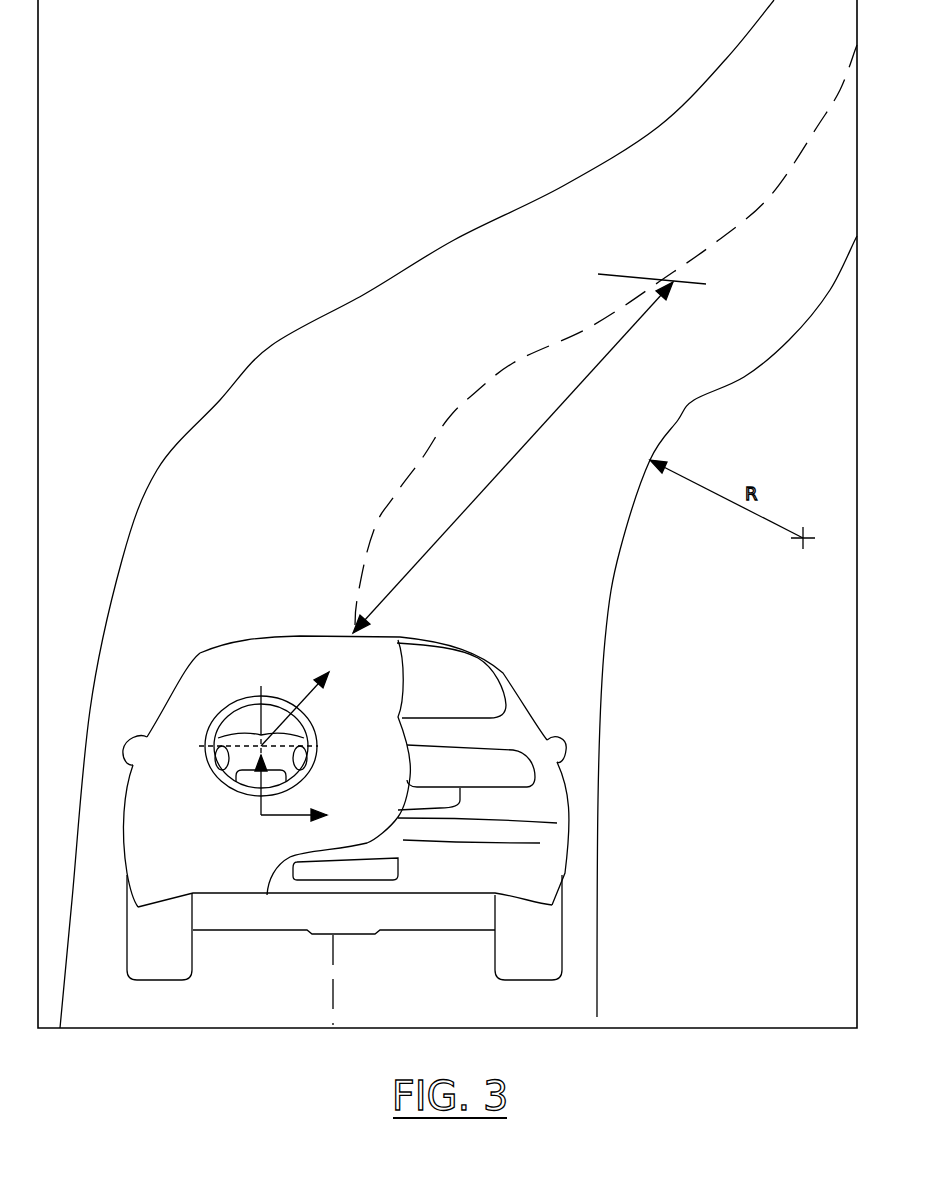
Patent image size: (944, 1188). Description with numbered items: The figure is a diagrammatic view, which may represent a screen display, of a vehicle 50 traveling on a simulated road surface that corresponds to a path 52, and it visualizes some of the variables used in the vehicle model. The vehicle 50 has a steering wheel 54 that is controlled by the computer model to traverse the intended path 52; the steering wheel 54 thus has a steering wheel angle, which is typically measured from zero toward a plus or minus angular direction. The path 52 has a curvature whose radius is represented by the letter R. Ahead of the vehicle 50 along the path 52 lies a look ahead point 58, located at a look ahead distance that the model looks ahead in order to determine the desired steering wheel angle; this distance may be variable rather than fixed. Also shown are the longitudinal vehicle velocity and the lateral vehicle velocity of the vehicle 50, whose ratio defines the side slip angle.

The vehicle 50 is at (570, 810).
The path 52 is at (580, 980).
The steering wheel 54 is at (310, 720).
The look ahead point 58 is at (686, 281).